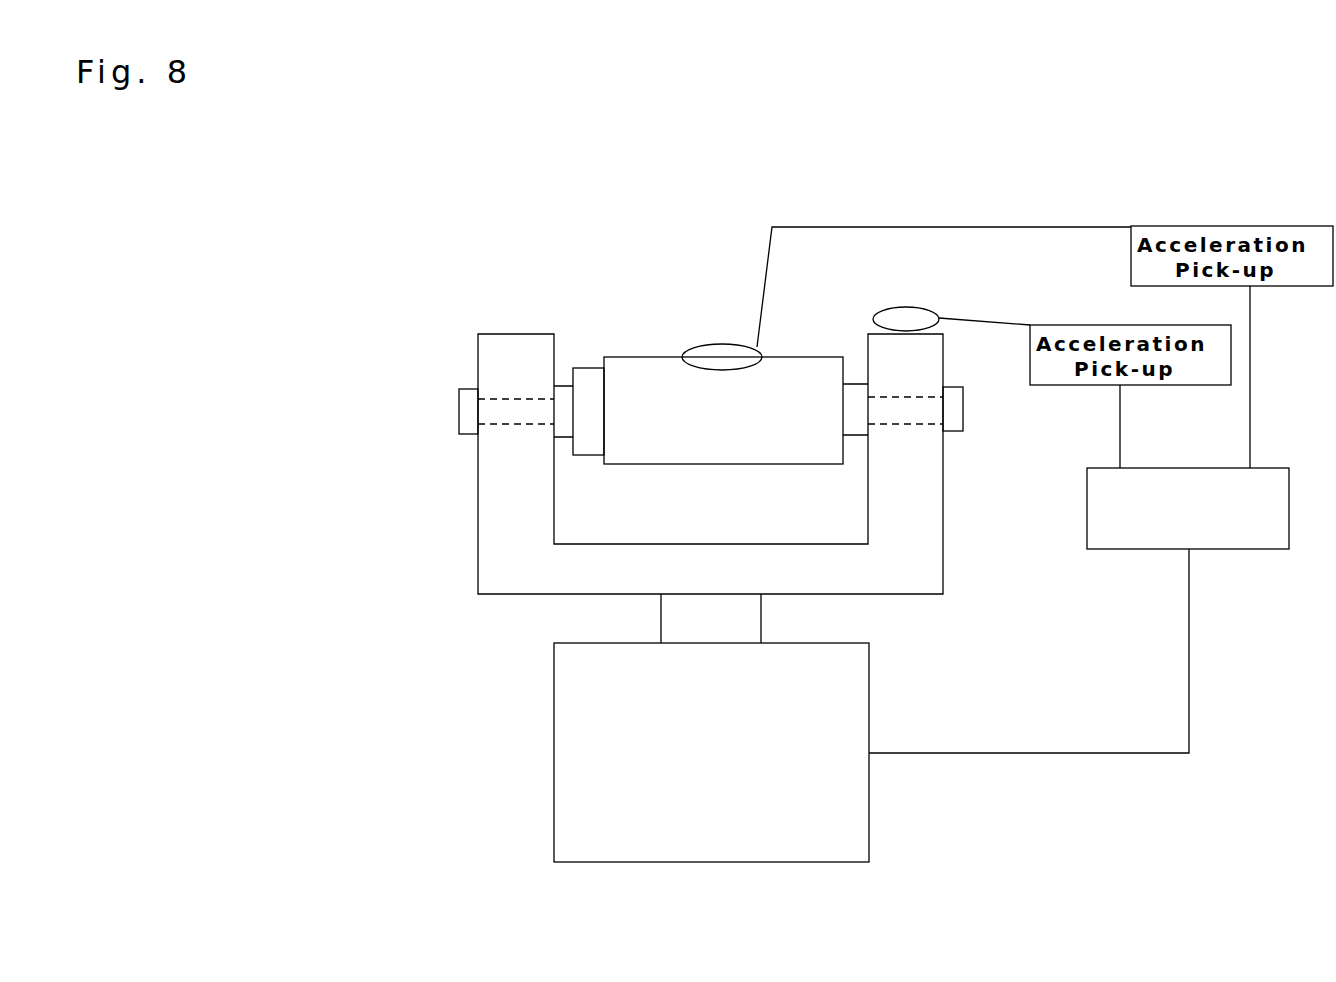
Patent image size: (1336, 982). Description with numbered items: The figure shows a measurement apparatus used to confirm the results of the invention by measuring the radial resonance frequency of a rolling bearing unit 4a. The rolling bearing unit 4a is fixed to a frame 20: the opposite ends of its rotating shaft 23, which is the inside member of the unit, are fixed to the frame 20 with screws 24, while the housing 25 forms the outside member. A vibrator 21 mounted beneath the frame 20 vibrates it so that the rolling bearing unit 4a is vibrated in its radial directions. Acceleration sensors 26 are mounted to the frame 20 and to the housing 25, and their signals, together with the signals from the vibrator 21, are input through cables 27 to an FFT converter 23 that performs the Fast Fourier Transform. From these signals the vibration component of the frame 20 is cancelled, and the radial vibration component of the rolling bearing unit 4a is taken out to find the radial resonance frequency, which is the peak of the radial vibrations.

The frame 20 is at (527, 580).
The vibrator 21 is at (707, 814).
The FFT converter 23 is at (564, 398).
The screws 24 is at (472, 402).
The rolling bearing unit 4a is at (638, 398).
The housing 25 is at (790, 378).
The acceleration sensors 26 is at (722, 352).
The cables 27 is at (1035, 226).